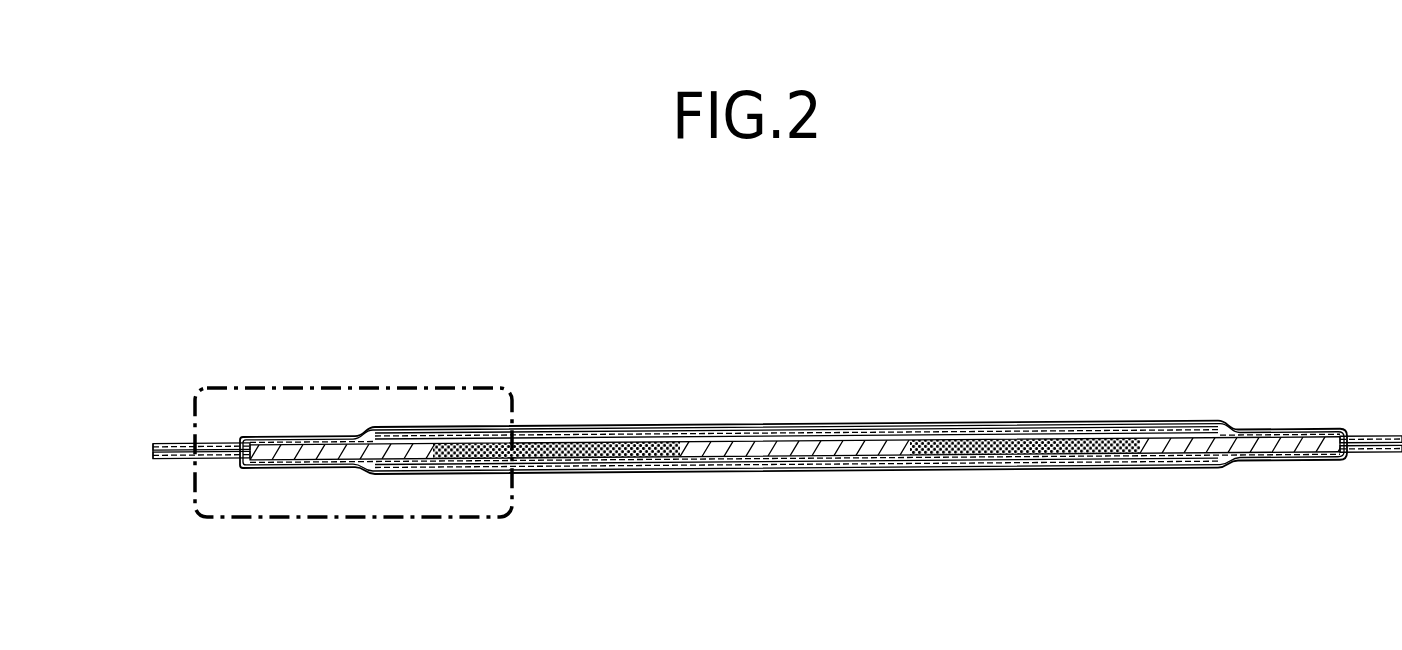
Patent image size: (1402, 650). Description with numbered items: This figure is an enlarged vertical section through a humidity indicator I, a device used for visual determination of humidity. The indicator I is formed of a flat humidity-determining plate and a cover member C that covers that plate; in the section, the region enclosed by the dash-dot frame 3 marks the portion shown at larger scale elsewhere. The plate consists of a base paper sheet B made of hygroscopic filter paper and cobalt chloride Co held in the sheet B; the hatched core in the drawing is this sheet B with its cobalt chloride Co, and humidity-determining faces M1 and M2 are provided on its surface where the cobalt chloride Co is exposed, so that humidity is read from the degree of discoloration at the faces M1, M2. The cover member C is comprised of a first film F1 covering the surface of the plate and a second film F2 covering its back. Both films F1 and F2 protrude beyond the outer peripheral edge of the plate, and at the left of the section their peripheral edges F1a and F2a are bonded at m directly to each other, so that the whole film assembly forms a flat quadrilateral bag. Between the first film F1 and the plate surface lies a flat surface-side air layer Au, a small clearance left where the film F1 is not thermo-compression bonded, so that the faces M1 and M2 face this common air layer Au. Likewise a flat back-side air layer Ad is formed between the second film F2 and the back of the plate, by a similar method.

The region shown enlarged in FIG. 3 is at (452, 378).
The humidity indicator I is at (1188, 384).
The first film F1 is at (787, 427).
The second film F2 is at (711, 470).
The peripheral edge of the first film F1a is at (177, 445).
The peripheral edge of the second film F2a is at (178, 462).
The humidity-determining face M1 is at (650, 437).
The humidity-determining face M2 is at (1082, 428).
The surface-side air layer Au is at (548, 428).
The cobalt chloride Co is at (583, 443).
The back-side air layer Ad is at (607, 462).
The base paper sheet B is at (873, 425).
The bonding location m is at (160, 450).
The cover member C is at (818, 596).